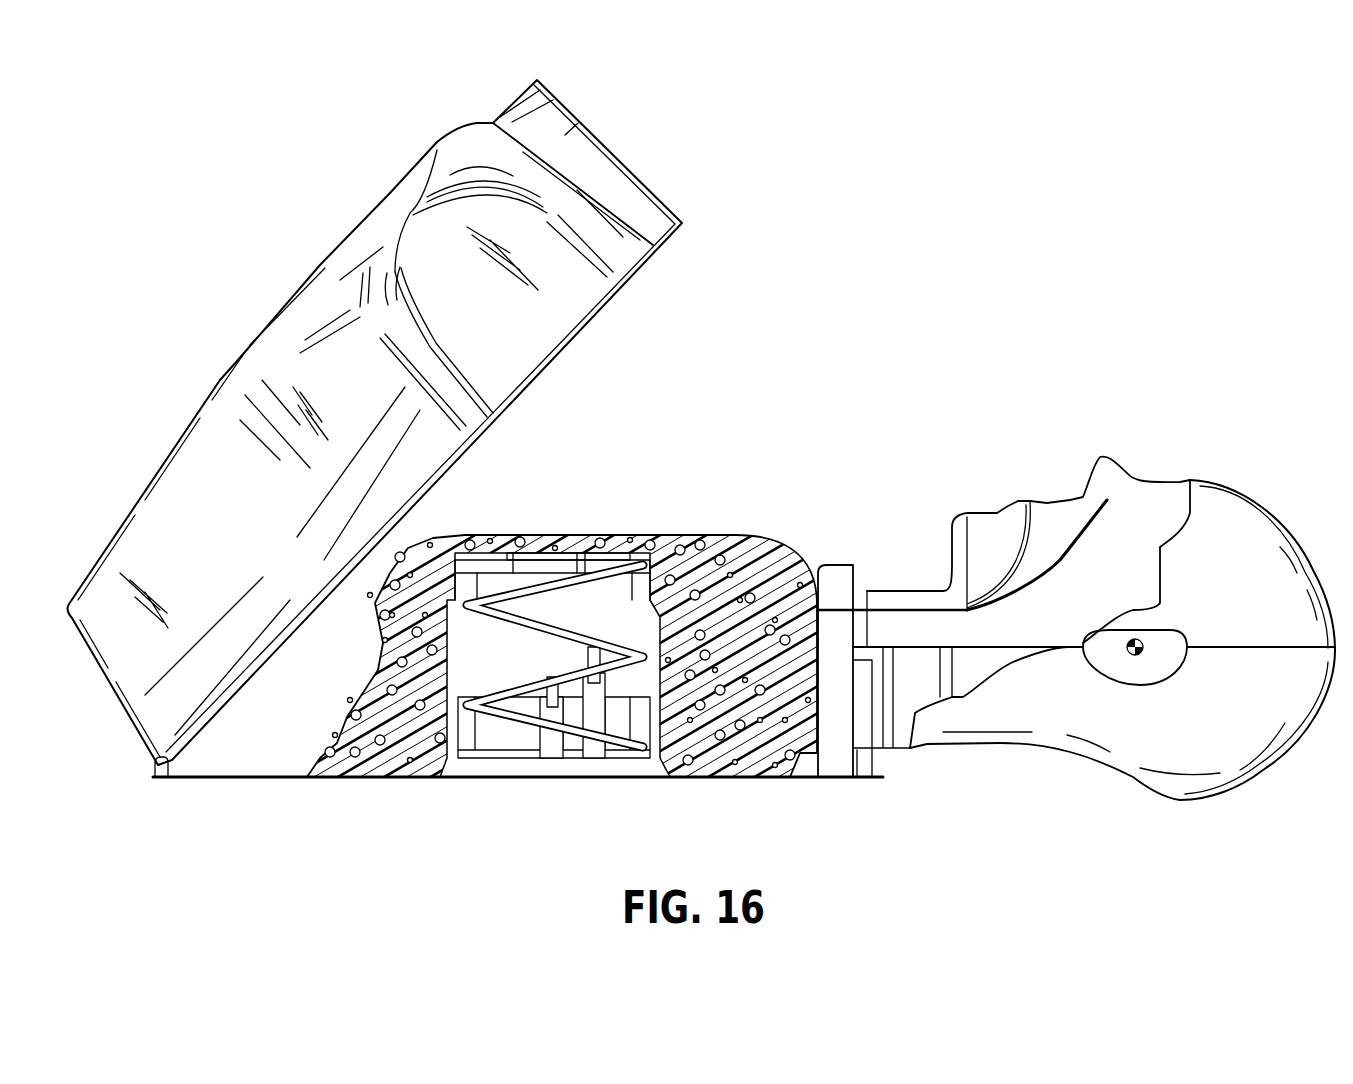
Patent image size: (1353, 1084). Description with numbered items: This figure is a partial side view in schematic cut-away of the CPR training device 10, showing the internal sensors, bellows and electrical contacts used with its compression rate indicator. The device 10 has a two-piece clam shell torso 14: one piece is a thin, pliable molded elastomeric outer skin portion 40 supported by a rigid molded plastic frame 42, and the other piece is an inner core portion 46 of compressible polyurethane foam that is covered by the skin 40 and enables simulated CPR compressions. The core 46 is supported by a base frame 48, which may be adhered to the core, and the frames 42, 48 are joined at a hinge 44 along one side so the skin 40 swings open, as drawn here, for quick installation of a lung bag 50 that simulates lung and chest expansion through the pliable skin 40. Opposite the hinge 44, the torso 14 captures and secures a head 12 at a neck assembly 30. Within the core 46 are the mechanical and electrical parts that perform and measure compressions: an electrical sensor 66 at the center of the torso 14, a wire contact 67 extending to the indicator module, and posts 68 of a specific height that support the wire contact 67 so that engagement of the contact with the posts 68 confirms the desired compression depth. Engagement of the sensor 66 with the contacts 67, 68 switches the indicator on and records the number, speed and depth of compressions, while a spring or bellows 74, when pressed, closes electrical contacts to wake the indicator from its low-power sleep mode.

The medical training device 10 is at (1127, 382).
The head 12 is at (1124, 832).
The torso 14 is at (329, 839).
The neck assembly 30 is at (883, 551).
The outer skin portion 40 is at (465, 153).
The rigid frame 42 is at (657, 250).
The hinge 44 is at (158, 770).
The inner core portion 46 is at (757, 745).
The base frame 48 is at (833, 765).
The lung bag 50 is at (1030, 578).
The electrical sensor 66 is at (540, 568).
The wire contact 67 is at (550, 678).
The posts 68 is at (597, 720).
The bellows 74 is at (492, 597).